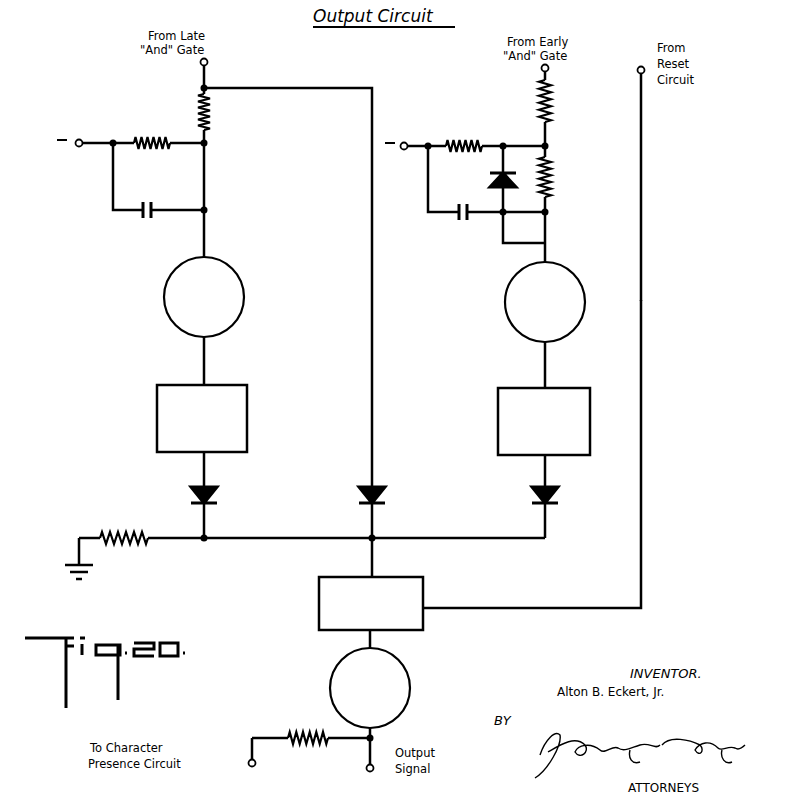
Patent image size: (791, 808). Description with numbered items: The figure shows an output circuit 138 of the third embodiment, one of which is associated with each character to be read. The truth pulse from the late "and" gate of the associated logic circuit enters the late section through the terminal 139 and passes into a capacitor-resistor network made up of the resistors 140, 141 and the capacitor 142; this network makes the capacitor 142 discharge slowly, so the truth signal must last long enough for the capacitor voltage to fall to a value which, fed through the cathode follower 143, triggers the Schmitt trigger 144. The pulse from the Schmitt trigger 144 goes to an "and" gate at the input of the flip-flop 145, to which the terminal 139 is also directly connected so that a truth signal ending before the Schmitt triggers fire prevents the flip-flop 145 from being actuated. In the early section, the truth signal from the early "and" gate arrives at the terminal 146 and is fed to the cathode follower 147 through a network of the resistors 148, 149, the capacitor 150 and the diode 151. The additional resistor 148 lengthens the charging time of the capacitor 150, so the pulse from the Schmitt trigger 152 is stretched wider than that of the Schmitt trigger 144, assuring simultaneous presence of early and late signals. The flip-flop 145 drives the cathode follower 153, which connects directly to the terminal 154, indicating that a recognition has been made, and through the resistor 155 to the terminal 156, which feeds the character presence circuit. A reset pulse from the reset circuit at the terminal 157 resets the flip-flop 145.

The output circuit 138 is at (655, 271).
The terminal 139 is at (208, 63).
The resistor 140 is at (210, 126).
The resistor 141 is at (162, 138).
The capacitor 142 is at (147, 218).
The cathode follower 143 is at (222, 322).
The Schmitt trigger 144 is at (157, 385).
The flip-flop 145 is at (319, 593).
The terminal 146 is at (549, 72).
The cathode follower 147 is at (506, 305).
The resistor 148 is at (550, 181).
The resistor 149 is at (472, 131).
The capacitor 150 is at (466, 222).
The diode 151 is at (496, 177).
The Schmitt trigger 152 is at (498, 394).
The cathode follower 153 is at (393, 668).
The terminal 154 is at (366, 768).
The resistor 155 is at (316, 736).
The terminal 156 is at (255, 766).
The terminal 157 is at (638, 74).